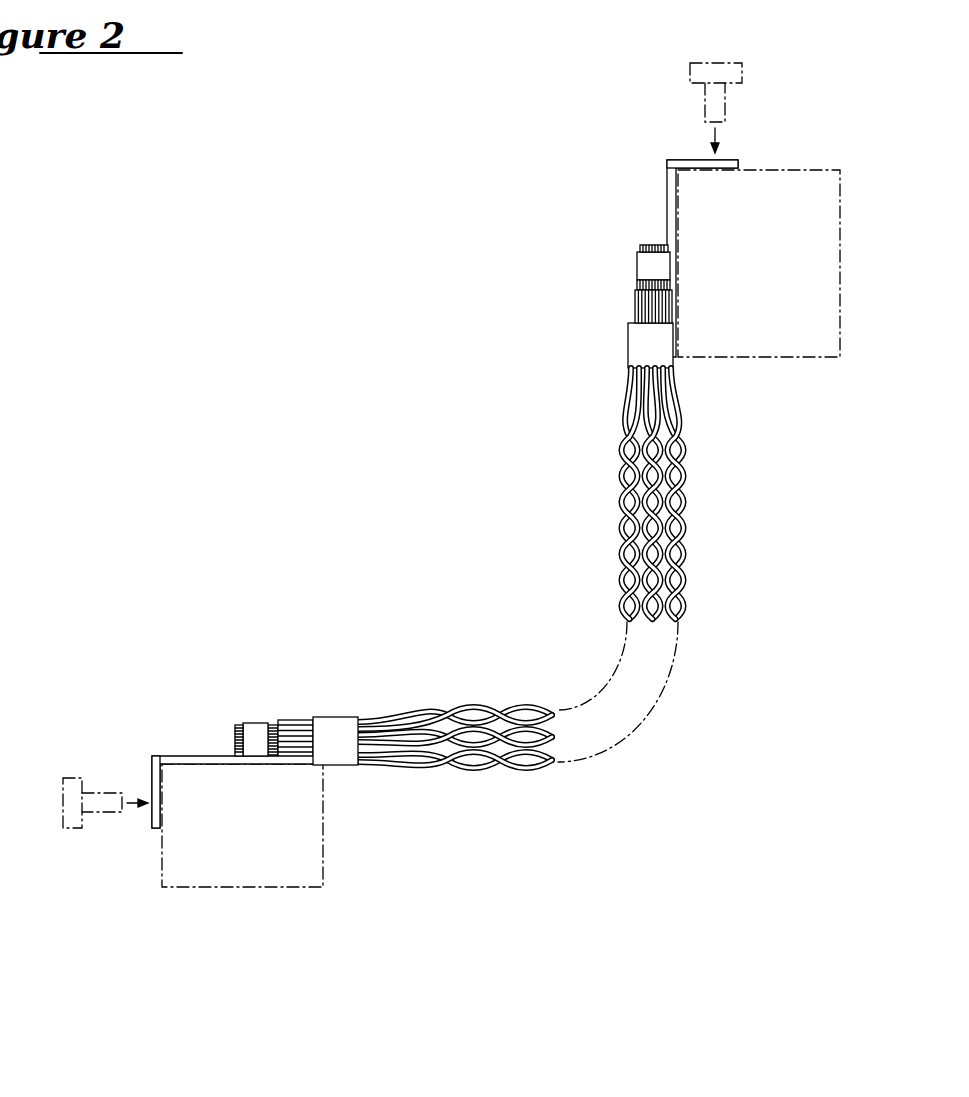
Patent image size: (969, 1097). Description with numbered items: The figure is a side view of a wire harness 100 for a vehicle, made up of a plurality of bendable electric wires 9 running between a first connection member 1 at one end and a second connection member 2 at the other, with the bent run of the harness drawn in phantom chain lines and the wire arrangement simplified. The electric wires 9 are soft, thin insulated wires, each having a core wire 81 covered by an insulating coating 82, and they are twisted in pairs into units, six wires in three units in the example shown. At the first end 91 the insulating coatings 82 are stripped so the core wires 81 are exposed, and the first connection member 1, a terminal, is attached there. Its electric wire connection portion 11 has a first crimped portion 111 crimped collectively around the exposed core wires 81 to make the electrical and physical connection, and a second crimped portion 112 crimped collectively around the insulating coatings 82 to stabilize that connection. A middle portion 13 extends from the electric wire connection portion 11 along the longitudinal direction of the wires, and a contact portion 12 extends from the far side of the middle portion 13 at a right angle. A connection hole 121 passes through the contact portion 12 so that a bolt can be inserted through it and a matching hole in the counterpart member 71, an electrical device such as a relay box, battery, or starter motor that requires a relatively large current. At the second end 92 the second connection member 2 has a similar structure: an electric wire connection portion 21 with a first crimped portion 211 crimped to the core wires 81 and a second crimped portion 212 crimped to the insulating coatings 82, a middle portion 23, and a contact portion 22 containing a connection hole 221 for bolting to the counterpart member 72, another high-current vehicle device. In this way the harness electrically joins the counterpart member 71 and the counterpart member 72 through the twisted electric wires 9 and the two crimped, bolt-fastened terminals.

The first connection member 1 is at (685, 215).
The contact portion 12 is at (677, 160).
The middle portion 13 is at (667, 193).
The connection hole 121 is at (721, 157).
The counterpart member 71 is at (797, 168).
The electric wire connection portion 11 is at (601, 306).
The first crimped portion 111 is at (637, 267).
The second crimped portion 112 is at (620, 345).
The core wires 81 is at (664, 289).
The insulating coatings 82 is at (673, 364).
The first end 91 is at (690, 404).
The second end 92 is at (455, 712).
The electric wires 9 is at (493, 730).
The wire harness 100 is at (571, 590).
The second connection member 2 is at (210, 792).
The electric wire connection portion 21 is at (296, 697).
The first crimped portion 211 is at (265, 723).
The second crimped portion 212 is at (329, 716).
The contact portion 22 is at (152, 768).
The middle portion 23 is at (168, 755).
The connection hole 221 is at (149, 810).
The counterpart member 72 is at (271, 889).